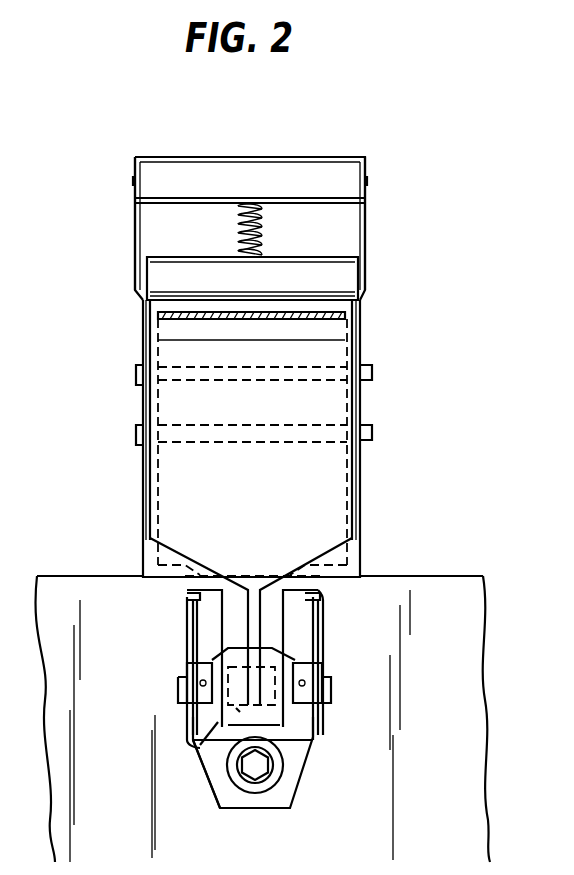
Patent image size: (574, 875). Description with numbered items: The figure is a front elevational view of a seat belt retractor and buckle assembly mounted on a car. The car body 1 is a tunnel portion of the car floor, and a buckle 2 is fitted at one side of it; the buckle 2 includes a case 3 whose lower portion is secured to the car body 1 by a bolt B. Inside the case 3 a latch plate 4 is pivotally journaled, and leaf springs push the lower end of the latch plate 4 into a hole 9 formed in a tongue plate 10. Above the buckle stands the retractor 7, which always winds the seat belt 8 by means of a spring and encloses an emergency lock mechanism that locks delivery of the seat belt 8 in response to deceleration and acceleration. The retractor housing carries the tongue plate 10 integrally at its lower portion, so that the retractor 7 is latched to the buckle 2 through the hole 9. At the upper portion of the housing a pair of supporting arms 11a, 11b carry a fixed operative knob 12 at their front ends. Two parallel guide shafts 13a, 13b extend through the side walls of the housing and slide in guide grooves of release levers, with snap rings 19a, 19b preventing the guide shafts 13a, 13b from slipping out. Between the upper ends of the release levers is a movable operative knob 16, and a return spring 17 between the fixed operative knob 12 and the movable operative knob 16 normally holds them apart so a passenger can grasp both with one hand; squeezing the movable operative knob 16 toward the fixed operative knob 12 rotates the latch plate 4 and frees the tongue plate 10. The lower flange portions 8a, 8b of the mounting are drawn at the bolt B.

The car body 1 is at (442, 575).
The buckle 2 is at (185, 640).
The case 3 is at (305, 622).
The latch plate 4 is at (318, 648).
The retractor 7 is at (280, 485).
The seat belt 8 is at (345, 297).
The mounting plate upper edge 8a is at (320, 733).
The mounting plate lower edge 8b is at (232, 730).
The hole 9 is at (218, 722).
The tongue plate 10 is at (237, 707).
The supporting arm 11a is at (135, 228).
The supporting arm 11b is at (366, 228).
The fixed operative knob 12 is at (328, 170).
The guide shaft 13a is at (372, 432).
The guide shaft 13b is at (372, 372).
The movable operative knob 16 is at (175, 272).
The return spring 17 is at (265, 222).
The snap ring 19a is at (365, 420).
The snap ring 19b is at (363, 357).
The bolt B is at (262, 766).